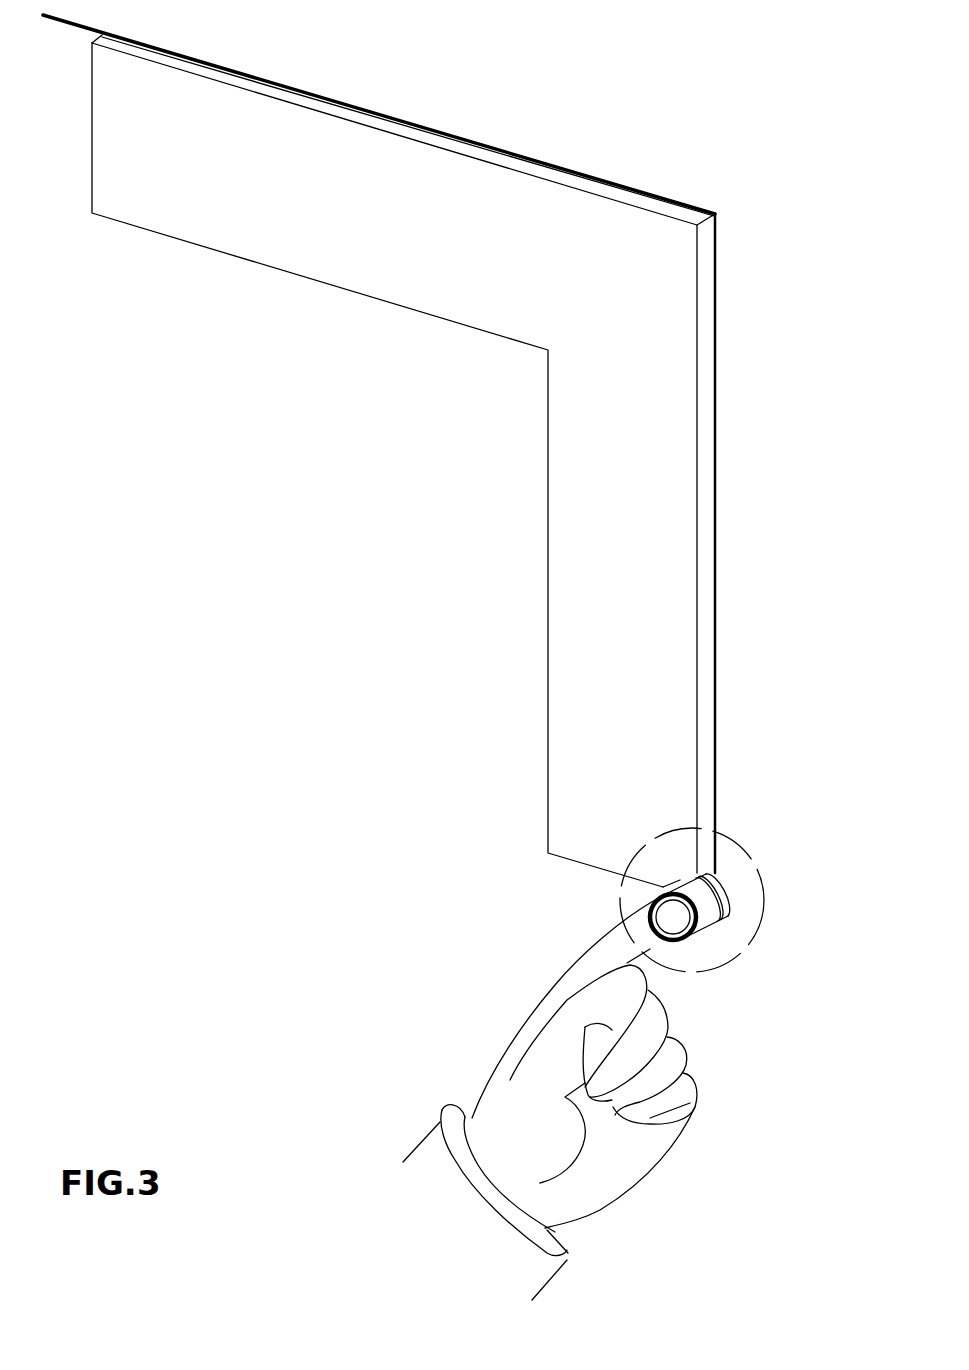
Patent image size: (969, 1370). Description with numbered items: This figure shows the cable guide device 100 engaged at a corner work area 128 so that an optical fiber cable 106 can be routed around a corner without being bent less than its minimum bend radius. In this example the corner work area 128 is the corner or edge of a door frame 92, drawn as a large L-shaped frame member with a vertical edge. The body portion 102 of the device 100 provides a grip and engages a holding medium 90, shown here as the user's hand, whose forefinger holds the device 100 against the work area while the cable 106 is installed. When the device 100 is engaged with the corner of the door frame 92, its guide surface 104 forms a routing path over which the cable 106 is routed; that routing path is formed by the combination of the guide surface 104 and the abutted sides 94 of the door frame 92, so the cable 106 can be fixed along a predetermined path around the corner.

The holding medium 90 is at (588, 950).
The door frame 92 is at (668, 358).
The abutted sides 94 is at (707, 402).
The cable guide device 100 is at (746, 960).
The body portion 102 is at (703, 932).
The guide surface 104 is at (723, 893).
The optical fiber cable 106 is at (718, 742).
The corner work area 128 is at (678, 863).